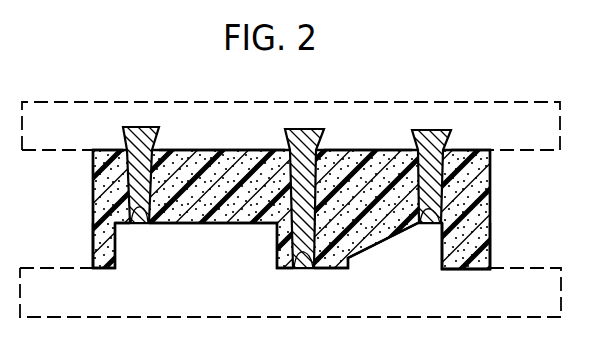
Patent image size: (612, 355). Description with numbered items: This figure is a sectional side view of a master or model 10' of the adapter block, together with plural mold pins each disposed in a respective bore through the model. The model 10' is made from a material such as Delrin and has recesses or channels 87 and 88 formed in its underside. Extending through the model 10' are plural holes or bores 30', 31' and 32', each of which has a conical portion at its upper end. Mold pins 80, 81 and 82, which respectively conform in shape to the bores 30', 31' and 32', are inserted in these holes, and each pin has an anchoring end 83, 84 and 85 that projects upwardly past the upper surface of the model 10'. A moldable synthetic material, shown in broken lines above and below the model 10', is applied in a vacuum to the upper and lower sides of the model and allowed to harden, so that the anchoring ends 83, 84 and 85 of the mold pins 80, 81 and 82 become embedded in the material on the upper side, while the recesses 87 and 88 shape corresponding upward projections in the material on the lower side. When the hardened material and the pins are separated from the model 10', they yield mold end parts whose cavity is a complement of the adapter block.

The model 10' is at (306, 210).
The mold pin 80 is at (269, 158).
The mold pin 81 is at (122, 162).
The mold pin 82 is at (413, 178).
The anchoring end 83 is at (305, 136).
The anchoring end 84 is at (141, 138).
The anchoring end 85 is at (432, 136).
The recess 87 is at (117, 247).
The recess 88 is at (442, 249).
The bore 30' is at (305, 281).
The bore 31' is at (154, 235).
The bore 32' is at (412, 242).